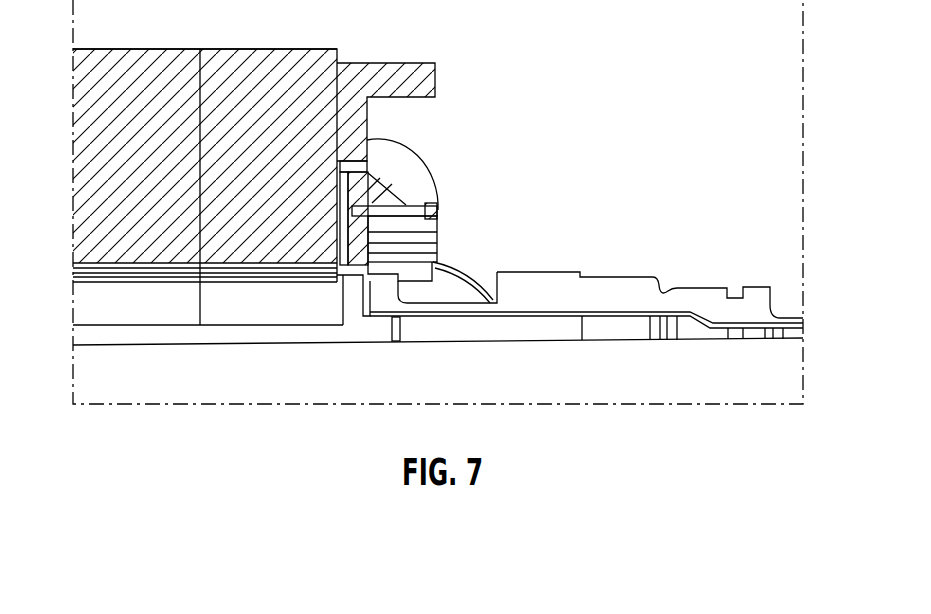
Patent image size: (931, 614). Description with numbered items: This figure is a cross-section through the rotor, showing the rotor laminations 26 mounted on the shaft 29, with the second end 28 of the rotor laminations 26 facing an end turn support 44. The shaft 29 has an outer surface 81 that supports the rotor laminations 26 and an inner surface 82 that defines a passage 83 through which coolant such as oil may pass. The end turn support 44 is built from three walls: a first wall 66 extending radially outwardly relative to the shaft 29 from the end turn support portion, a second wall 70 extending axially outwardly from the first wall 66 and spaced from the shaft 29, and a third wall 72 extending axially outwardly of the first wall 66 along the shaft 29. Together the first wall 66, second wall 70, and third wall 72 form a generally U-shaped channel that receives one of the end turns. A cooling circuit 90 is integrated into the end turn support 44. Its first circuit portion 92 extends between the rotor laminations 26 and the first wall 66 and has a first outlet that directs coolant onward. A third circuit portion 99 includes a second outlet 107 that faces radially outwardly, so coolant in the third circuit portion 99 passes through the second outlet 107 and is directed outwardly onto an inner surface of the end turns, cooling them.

The rotor laminations 26 is at (265, 67).
The second end 28 is at (338, 52).
The shaft 29 is at (790, 304).
The second end turn support 44 is at (448, 64).
The first wall 66 is at (353, 100).
The second wall 70 is at (427, 80).
The third wall 72 is at (436, 207).
The outer surface 81 is at (451, 310).
The inner surface 82 is at (645, 368).
The passage 83 is at (208, 385).
The cooling circuit 90 is at (336, 183).
The first circuit portion 92 is at (350, 250).
The third circuit portion 99 is at (375, 190).
The second outlet 107 is at (435, 198).